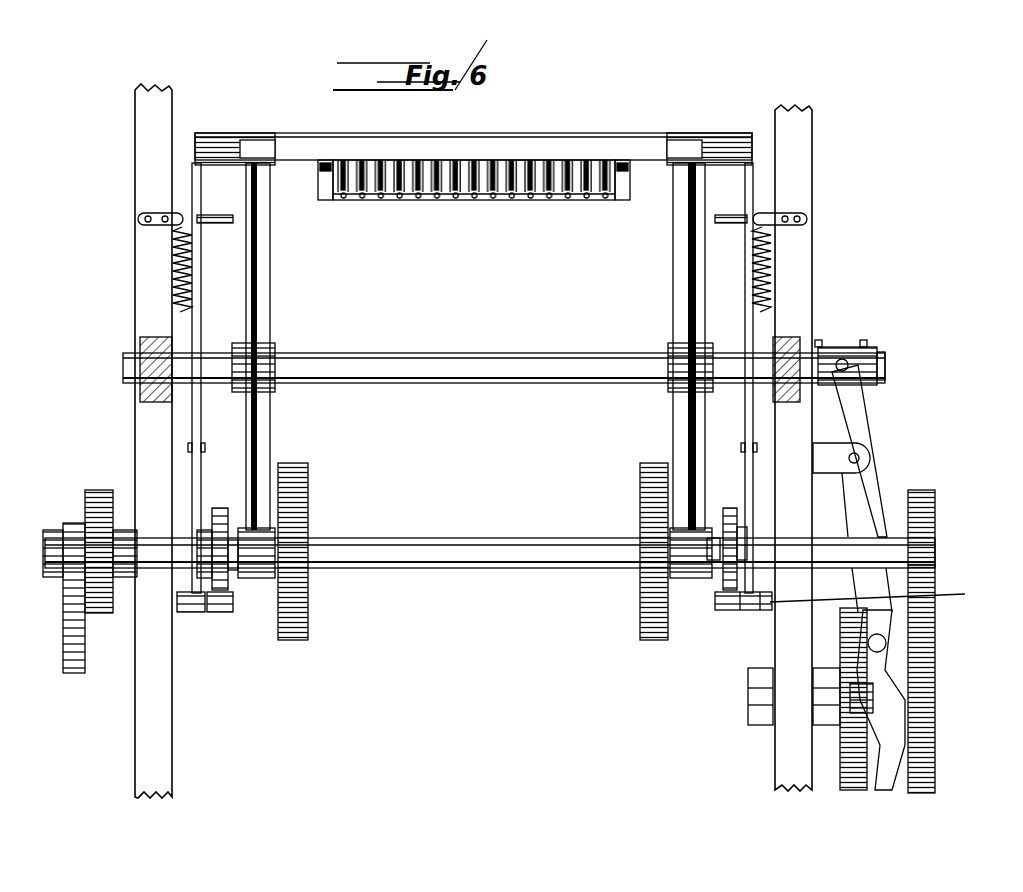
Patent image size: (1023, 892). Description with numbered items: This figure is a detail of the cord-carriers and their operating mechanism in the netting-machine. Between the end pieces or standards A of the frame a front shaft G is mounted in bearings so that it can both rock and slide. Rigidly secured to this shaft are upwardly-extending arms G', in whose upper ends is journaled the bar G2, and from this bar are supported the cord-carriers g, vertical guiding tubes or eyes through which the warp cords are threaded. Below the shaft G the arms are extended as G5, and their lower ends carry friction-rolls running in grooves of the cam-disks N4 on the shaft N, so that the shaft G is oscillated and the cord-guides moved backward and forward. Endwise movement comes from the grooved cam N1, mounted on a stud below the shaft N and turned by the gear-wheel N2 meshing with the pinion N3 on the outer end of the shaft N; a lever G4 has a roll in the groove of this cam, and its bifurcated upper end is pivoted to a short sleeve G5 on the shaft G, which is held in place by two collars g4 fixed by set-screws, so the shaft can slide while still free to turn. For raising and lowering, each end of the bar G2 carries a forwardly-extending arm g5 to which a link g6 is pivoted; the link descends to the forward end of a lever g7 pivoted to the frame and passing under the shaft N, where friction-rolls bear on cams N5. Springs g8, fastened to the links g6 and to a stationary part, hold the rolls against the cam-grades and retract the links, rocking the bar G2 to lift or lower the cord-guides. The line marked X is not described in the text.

The end pieces or standards A is at (140, 714).
The shaft G is at (504, 379).
The upwardly-extending arms G' is at (472, 370).
The bar G2 is at (473, 131).
The lever G4 is at (876, 642).
The sleeve G5 is at (838, 348).
The cord-carriers g is at (388, 187).
The collars g4 is at (837, 443).
The forwardly-extending arm g5 is at (218, 142).
The link g6 is at (214, 247).
The lever g7 is at (198, 612).
The springs g8 is at (176, 277).
The shaft N is at (466, 566).
The grooved cam N1 is at (835, 780).
The gear-wheel N2 is at (943, 780).
The pinion N3 is at (930, 490).
The cam-disks N4 is at (303, 640).
The cams N5 is at (222, 510).
The section line X is at (880, 601).